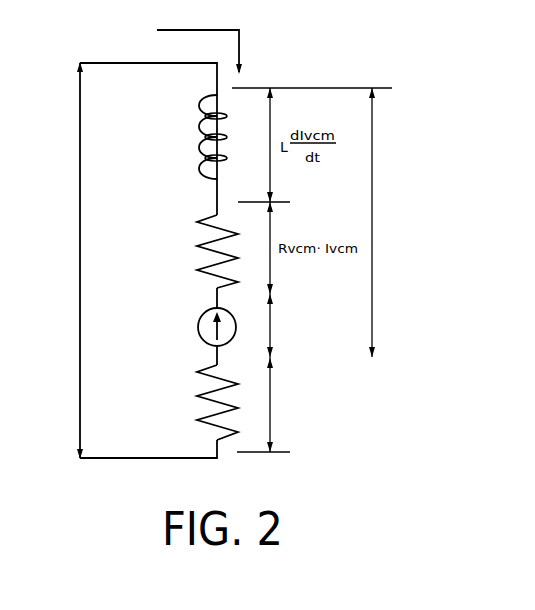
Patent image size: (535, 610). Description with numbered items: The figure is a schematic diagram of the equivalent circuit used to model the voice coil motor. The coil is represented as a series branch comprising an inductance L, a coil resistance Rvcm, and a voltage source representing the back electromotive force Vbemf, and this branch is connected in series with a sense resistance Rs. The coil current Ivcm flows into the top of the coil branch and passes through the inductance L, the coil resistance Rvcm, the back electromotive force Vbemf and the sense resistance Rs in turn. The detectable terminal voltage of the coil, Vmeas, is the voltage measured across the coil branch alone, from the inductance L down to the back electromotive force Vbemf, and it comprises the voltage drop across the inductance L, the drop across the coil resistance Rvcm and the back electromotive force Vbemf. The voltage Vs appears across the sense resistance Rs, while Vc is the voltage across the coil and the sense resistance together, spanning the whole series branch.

The inductance L is at (195, 137).
The coil resistance Rvcm is at (192, 251).
The back electromotive force Vbemf is at (238, 294).
The sense resistance Rs is at (198, 402).
The voltage between the coil and the sense resistance Vc is at (62, 260).
The coil current Ivcm is at (199, 43).
The terminal voltage of the coil Vmeas is at (399, 222).
The sense resistor voltage Vs is at (271, 404).